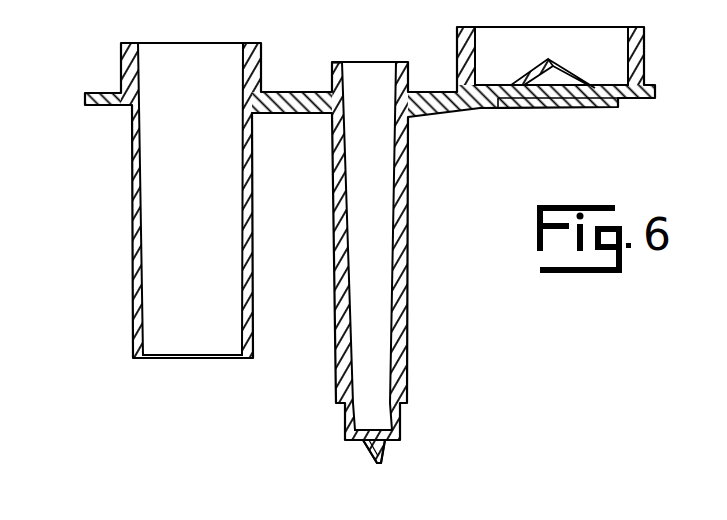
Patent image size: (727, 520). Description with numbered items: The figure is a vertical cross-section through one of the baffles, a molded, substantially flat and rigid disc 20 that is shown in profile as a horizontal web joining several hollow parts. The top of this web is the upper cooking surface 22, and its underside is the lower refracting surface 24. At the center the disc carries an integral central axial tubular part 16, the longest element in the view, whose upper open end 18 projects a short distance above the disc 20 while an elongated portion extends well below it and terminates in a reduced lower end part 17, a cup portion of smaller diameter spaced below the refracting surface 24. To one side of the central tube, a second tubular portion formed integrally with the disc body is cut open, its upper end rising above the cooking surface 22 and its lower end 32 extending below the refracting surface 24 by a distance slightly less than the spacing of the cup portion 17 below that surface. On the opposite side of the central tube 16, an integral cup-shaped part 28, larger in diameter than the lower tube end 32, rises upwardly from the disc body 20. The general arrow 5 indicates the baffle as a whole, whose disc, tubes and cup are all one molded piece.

The dispensing assembly 5 is at (423, 133).
The central axial tubular part 16 is at (410, 236).
The reduced lower end part 17 is at (401, 428).
The upper open end 18 is at (331, 71).
The disc 20 is at (92, 105).
The upper cooking surface 22 is at (98, 93).
The lower refracting surface 24 is at (282, 113).
The cup-shaped part 28 is at (645, 45).
The lower end of tube 32 is at (133, 252).